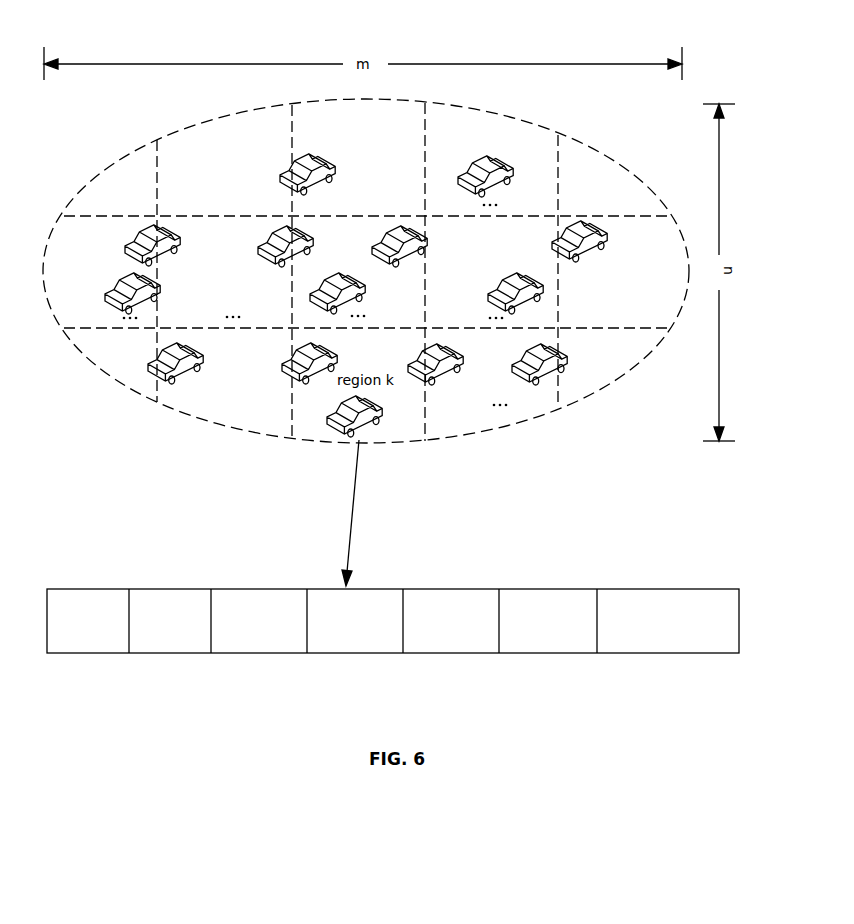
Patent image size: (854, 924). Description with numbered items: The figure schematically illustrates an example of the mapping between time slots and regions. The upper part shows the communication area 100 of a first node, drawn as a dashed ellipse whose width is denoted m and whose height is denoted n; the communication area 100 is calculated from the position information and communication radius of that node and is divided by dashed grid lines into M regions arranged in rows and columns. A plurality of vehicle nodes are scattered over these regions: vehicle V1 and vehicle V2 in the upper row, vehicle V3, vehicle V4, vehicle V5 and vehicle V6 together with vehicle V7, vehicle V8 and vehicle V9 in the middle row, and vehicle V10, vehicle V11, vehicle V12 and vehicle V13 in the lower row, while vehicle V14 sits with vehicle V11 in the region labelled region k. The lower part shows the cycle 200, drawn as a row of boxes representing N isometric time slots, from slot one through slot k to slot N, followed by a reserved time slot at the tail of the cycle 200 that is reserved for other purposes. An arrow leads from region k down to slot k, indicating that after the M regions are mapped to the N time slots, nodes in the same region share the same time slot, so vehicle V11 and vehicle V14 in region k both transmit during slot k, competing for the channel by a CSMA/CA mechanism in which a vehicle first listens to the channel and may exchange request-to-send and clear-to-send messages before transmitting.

The communication area 100 is at (509, 118).
The cycle 200 is at (645, 587).
The vehicle V1 is at (332, 162).
The vehicle V2 is at (510, 164).
The vehicle V3 is at (178, 233).
The vehicle V4 is at (311, 234).
The vehicle V5 is at (424, 234).
The vehicle V6 is at (605, 229).
The vehicle V7 is at (158, 281).
The vehicle V8 is at (363, 281).
The vehicle V9 is at (541, 281).
The vehicle V10 is at (200, 350).
The vehicle V11 is at (333, 350).
The vehicle V12 is at (460, 351).
The vehicle V13 is at (565, 351).
The vehicle V14 is at (380, 403).